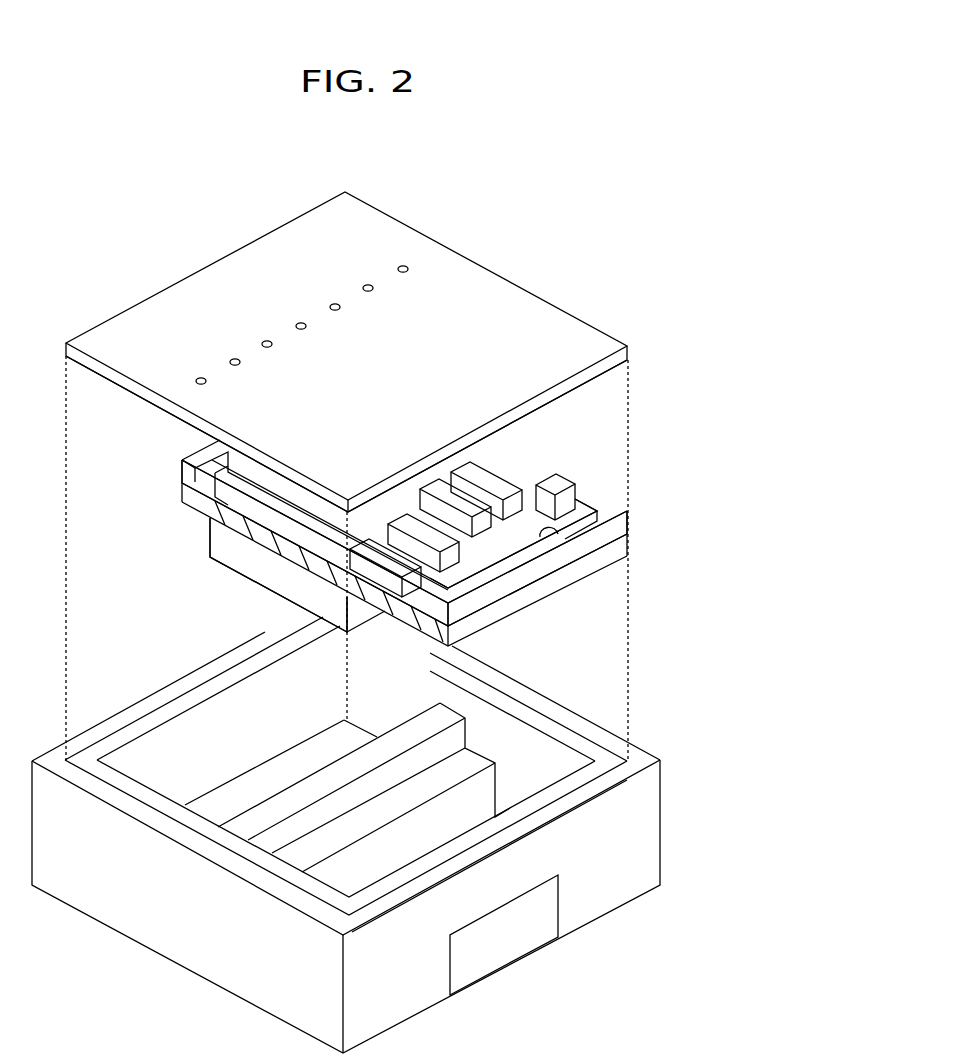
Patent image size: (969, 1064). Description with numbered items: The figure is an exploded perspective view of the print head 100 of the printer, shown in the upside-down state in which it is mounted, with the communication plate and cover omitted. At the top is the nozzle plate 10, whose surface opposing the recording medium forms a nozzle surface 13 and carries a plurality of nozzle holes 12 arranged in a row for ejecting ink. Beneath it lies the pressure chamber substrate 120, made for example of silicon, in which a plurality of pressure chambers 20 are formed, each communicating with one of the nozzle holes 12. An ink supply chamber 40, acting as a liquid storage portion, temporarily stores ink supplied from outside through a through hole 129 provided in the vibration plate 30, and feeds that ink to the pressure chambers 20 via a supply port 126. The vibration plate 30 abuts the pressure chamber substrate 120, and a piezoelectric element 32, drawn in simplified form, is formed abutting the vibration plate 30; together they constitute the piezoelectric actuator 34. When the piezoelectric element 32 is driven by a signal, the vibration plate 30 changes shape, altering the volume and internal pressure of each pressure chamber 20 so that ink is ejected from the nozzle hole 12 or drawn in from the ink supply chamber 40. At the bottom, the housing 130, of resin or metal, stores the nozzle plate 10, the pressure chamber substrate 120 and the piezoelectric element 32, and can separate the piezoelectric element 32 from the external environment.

The print head 100 is at (583, 179).
The nozzle plate 10 is at (508, 314).
The nozzle hole 12 is at (408, 266).
The nozzle surface 13 is at (548, 333).
The pressure chamber 20 is at (257, 515).
The vibration plate 30 is at (272, 540).
The piezoelectric element 32 is at (222, 545).
The piezoelectric actuator 34 is at (152, 617).
The ink supply chamber 40 is at (573, 506).
The pressure chamber substrate 120 is at (182, 462).
The supply port 126 is at (514, 483).
The through hole 129 is at (553, 540).
The housing 130 is at (648, 760).